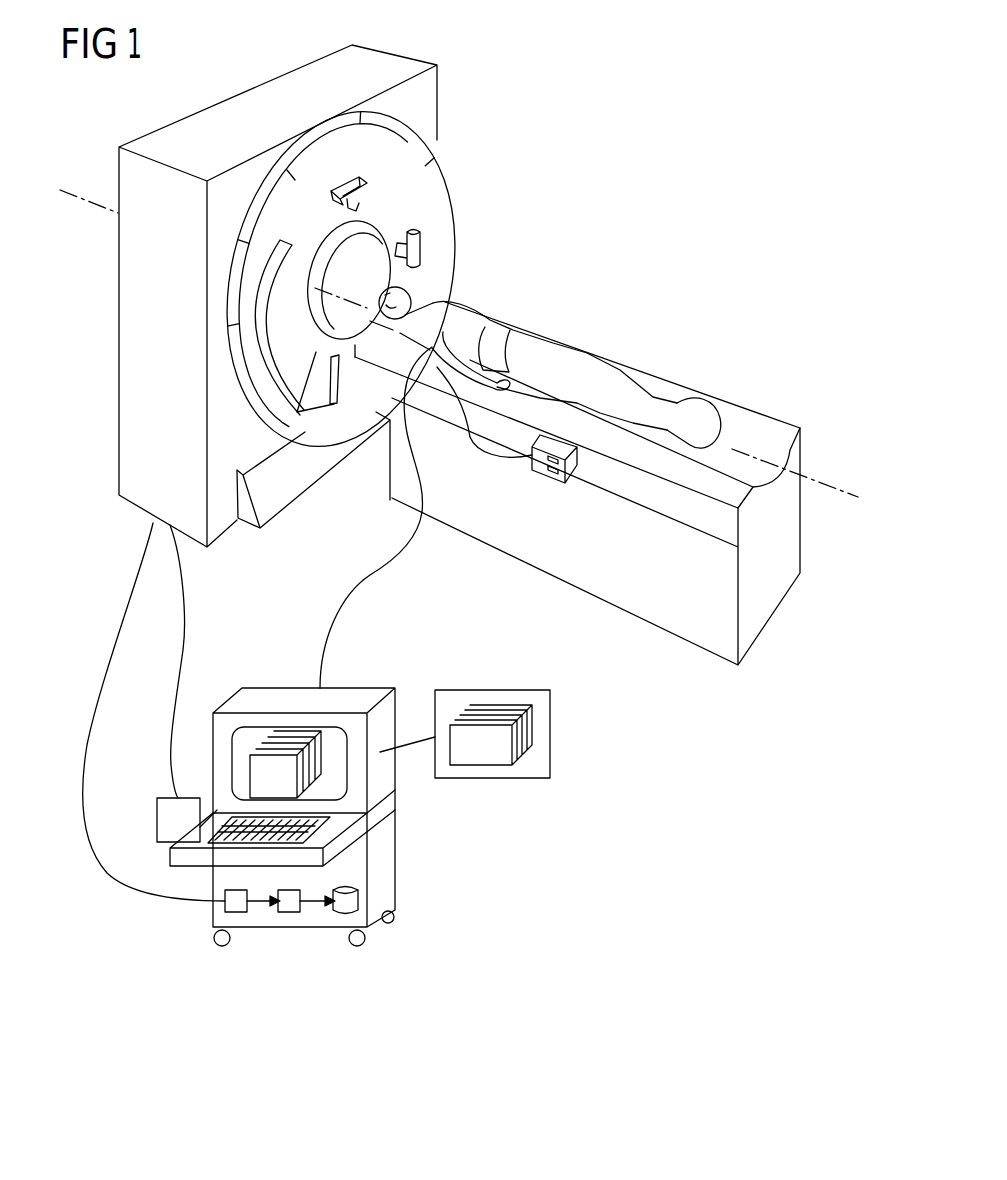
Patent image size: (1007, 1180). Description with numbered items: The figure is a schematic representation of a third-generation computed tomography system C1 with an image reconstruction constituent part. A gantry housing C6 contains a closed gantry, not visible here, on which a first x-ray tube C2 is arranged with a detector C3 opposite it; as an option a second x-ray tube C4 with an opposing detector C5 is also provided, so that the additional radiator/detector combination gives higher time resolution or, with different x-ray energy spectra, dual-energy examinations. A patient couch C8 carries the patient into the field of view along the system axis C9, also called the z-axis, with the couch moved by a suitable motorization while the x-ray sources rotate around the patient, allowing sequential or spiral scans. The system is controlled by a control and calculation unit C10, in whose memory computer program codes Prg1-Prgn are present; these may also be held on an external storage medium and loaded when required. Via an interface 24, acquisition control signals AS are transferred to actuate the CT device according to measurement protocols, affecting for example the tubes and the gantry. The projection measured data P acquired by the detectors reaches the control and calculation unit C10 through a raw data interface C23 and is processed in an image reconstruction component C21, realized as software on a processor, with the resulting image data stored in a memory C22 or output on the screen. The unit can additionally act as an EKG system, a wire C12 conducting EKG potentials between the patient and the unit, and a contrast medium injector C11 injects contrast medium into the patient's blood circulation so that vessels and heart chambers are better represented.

The computed tomography system C1 is at (632, 188).
The first x-ray tube C2 is at (420, 248).
The detector C3 is at (293, 387).
The second x-ray tube C4 is at (367, 188).
The detector C5 is at (343, 387).
The gantry housing C6 is at (147, 505).
The patient couch C8 is at (675, 622).
The system axis C9 is at (820, 480).
The control and calculation unit C10 is at (318, 846).
The contrast medium injector C11 is at (553, 485).
The wire C12 is at (350, 592).
The projection measured data P is at (127, 610).
The acquisition control signals AS is at (185, 645).
The interface 24 is at (157, 820).
The computer program codes Prg1-Prgn is at (478, 767).
The image reconstruction component C21 is at (290, 912).
The memory C22 is at (343, 913).
The raw data interface C23 is at (236, 912).